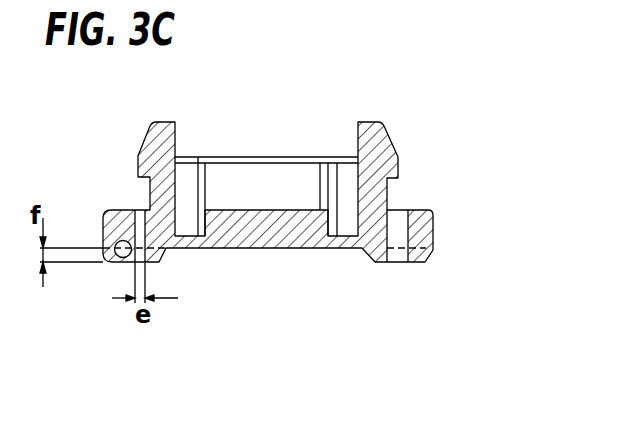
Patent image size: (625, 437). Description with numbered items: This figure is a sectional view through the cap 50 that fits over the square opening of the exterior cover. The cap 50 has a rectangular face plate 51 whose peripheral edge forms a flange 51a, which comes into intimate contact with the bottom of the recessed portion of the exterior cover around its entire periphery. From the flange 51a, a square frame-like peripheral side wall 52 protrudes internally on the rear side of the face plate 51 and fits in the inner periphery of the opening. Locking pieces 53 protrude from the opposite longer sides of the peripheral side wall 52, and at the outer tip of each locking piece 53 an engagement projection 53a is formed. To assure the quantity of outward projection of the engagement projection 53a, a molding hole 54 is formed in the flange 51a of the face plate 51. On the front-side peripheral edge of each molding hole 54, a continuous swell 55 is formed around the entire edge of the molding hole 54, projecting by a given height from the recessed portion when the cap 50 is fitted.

The cap 50 is at (308, 264).
The face plate 51 is at (250, 249).
The flange 51a is at (433, 236).
The peripheral side wall 52 is at (388, 195).
The locking piece 53 is at (168, 122).
The engagement projection 53a is at (138, 163).
The molding hole 54 is at (132, 255).
The swell 55 is at (105, 249).